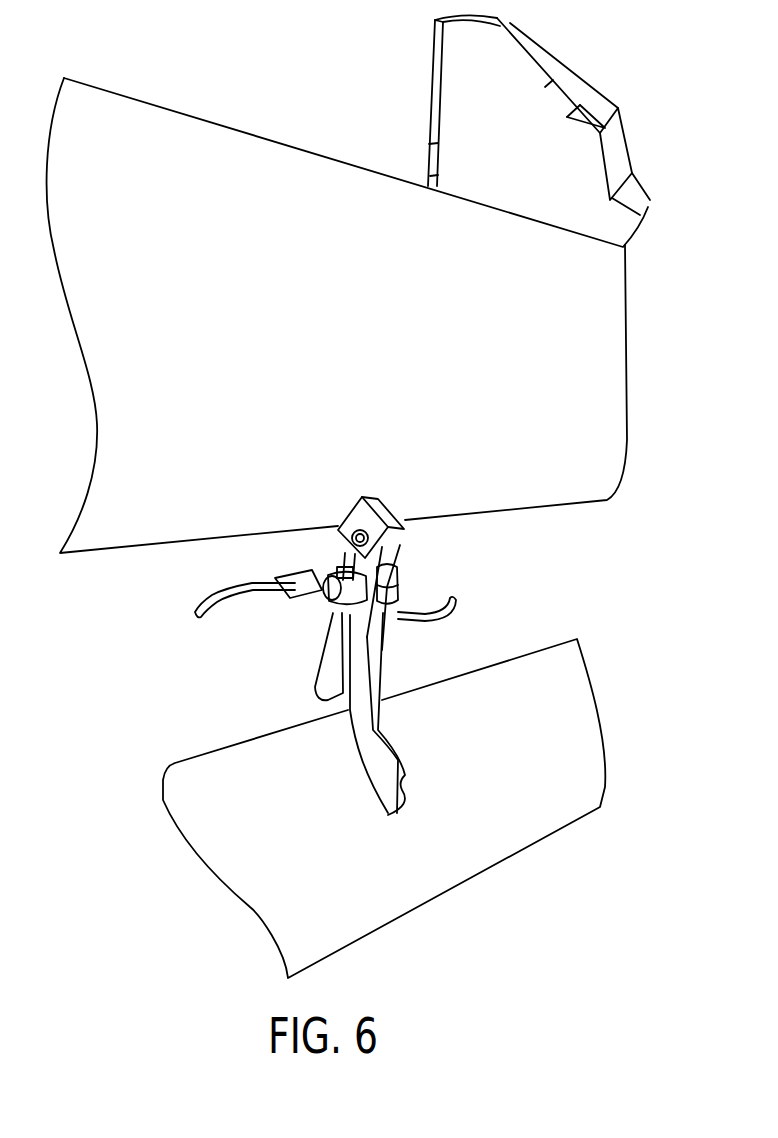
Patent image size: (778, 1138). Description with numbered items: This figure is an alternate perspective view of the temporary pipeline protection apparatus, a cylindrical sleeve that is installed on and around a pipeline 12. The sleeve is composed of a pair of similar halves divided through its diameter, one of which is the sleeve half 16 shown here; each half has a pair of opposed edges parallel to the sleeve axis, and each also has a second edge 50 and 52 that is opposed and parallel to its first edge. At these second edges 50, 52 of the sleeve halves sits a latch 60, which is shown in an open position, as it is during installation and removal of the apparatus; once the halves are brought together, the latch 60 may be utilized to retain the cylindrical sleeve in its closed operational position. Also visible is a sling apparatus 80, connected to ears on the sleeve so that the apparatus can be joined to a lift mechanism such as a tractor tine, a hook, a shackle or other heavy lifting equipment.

The pipeline 12 is at (587, 737).
The sleeve half 16 is at (612, 352).
The second edge 50 is at (542, 650).
The second edge 52 is at (563, 507).
The latch 60 is at (378, 762).
The sling apparatus 80 is at (530, 58).